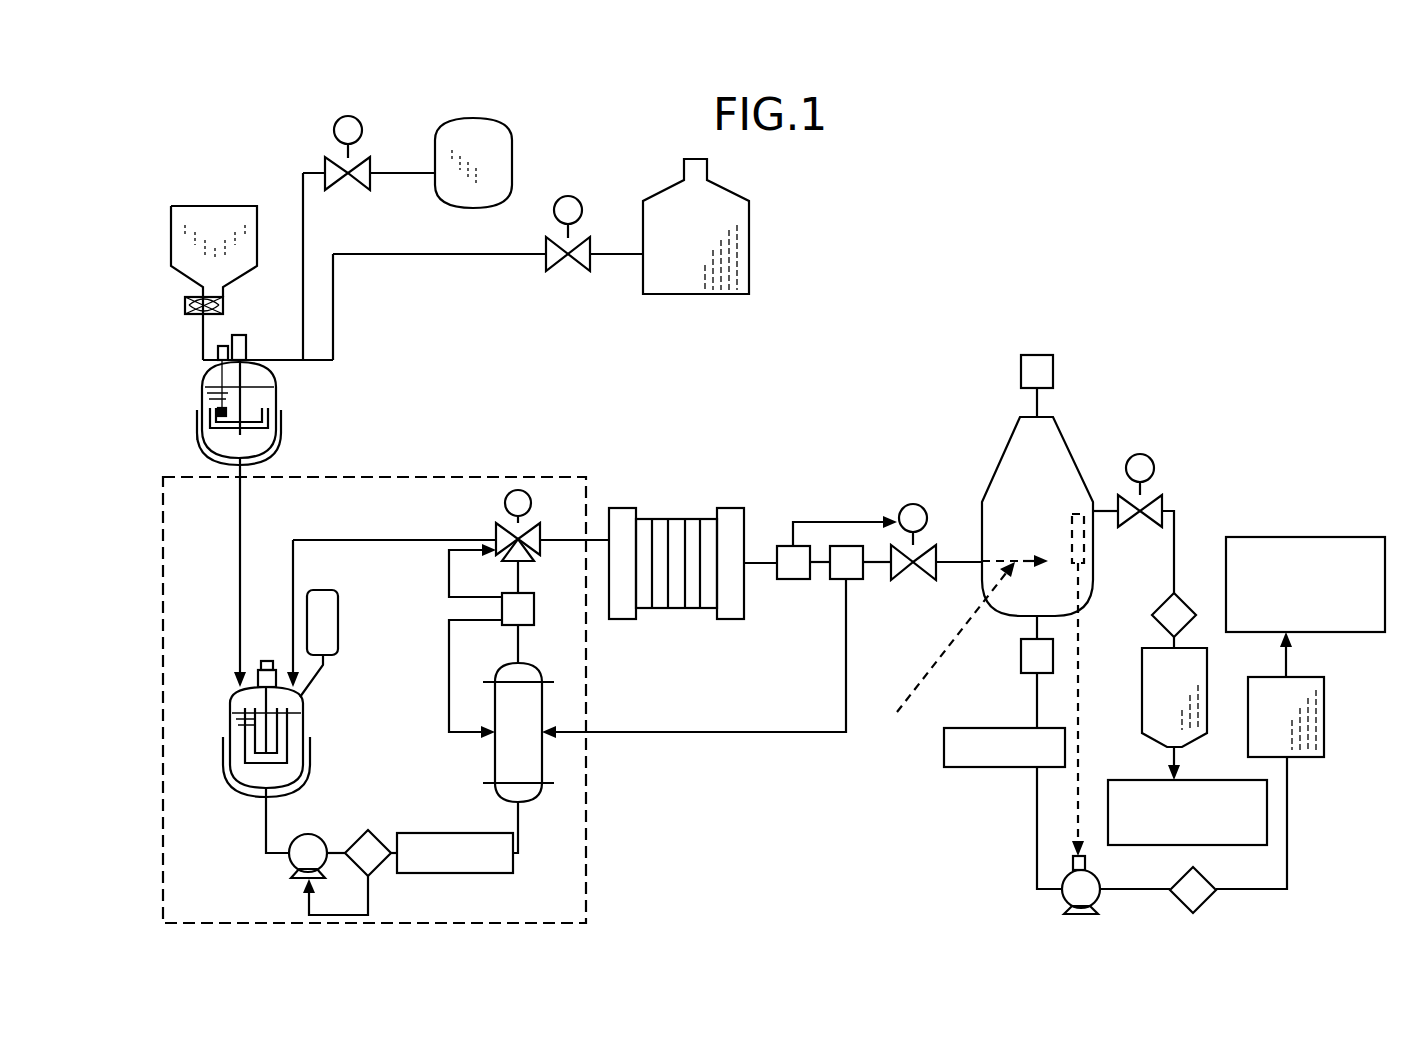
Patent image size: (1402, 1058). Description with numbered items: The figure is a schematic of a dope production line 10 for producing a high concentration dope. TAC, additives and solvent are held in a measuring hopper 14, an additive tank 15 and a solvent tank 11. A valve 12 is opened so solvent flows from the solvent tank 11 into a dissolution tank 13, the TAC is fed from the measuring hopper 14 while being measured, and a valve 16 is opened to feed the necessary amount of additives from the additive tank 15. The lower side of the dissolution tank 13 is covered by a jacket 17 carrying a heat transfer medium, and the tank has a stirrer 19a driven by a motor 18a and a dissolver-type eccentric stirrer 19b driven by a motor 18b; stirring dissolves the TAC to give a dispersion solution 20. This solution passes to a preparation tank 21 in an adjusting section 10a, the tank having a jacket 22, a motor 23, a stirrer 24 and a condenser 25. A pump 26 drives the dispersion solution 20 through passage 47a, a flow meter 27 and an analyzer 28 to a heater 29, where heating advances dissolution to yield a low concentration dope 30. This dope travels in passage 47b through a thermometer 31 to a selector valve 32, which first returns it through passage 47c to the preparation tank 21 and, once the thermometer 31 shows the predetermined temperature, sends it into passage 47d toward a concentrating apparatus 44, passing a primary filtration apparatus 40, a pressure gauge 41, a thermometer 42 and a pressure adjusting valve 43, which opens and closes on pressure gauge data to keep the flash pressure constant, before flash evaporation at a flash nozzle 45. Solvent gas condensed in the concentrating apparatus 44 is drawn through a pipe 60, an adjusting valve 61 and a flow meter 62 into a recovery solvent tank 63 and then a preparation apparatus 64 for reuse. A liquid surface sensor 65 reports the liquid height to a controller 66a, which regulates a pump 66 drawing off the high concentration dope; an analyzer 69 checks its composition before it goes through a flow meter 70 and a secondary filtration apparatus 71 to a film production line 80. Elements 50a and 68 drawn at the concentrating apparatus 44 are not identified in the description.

The dope production line 10 is at (868, 410).
The adjusting section 10a is at (505, 477).
The solvent tank 11 is at (749, 248).
The valve 12 is at (560, 262).
The dissolution tank 13 is at (276, 398).
The measuring hopper 14 is at (228, 206).
The additive tank 15 is at (512, 165).
The valve 16 is at (325, 170).
The jacket 17 is at (281, 455).
The motor 18a is at (246, 348).
The motor 18b is at (223, 347).
The stirrer 19a is at (268, 425).
The eccentric stirrer 19b is at (220, 406).
The dispersion solution 20 is at (215, 447).
The preparation tank 21 is at (230, 726).
The jacket 22 is at (310, 752).
The motor 23 is at (267, 660).
The stirrer 24 is at (287, 728).
The condenser 25 is at (338, 648).
The pump 26 is at (320, 834).
The flow meter 27 is at (380, 831).
The analyzer 28 is at (460, 873).
The heater 29 is at (542, 770).
The low concentration dope 30 is at (245, 770).
The thermometer 31 is at (534, 610).
The selector valve 32 is at (505, 501).
The primary filtration apparatus 40 is at (677, 608).
The pressure gauge 41 is at (790, 579).
The thermometer 42 is at (852, 579).
The pressure adjusting valve 43 is at (915, 580).
The concentrating apparatus 44 is at (1092, 446).
The flash nozzle 45 is at (951, 654).
The passage 47a is at (518, 835).
The passage 47b is at (518, 575).
The passage 47c is at (385, 540).
The passage 47d is at (598, 538).
The pressure sensor 50a is at (1053, 365).
The pipe 60 is at (1103, 503).
The adjusting valve 61 is at (1154, 470).
The flow meter 62 is at (1183, 601).
The recovery solvent tank 63 is at (1142, 698).
The preparation apparatus 64 is at (1122, 780).
The liquid surface sensor 65 is at (1084, 548).
The pump 66 is at (1065, 906).
The controller 66a is at (1073, 862).
The pressure sensor 68 is at (1021, 652).
The analyzer 69 is at (1002, 767).
The flow meter 70 is at (1205, 878).
The secondary filtration apparatus 71 is at (1310, 757).
The film production line 80 is at (1302, 537).